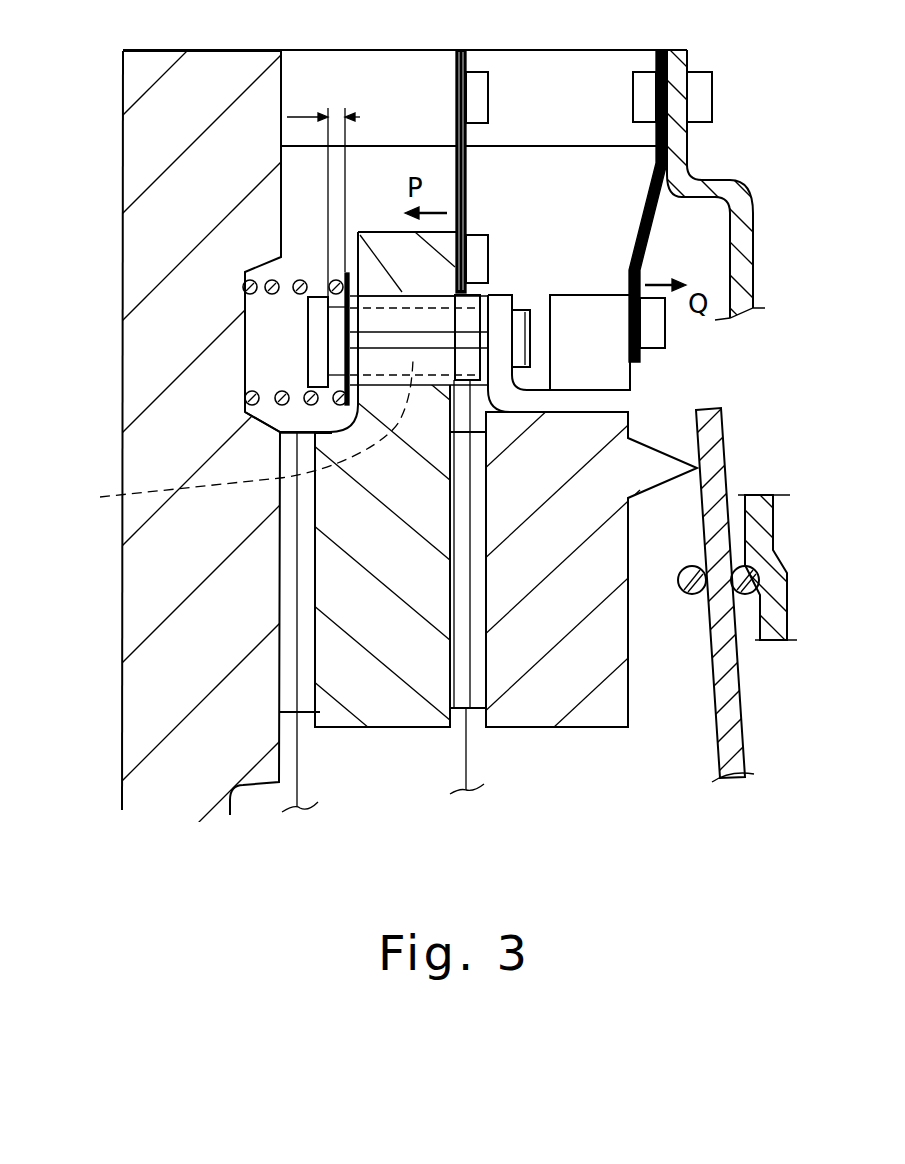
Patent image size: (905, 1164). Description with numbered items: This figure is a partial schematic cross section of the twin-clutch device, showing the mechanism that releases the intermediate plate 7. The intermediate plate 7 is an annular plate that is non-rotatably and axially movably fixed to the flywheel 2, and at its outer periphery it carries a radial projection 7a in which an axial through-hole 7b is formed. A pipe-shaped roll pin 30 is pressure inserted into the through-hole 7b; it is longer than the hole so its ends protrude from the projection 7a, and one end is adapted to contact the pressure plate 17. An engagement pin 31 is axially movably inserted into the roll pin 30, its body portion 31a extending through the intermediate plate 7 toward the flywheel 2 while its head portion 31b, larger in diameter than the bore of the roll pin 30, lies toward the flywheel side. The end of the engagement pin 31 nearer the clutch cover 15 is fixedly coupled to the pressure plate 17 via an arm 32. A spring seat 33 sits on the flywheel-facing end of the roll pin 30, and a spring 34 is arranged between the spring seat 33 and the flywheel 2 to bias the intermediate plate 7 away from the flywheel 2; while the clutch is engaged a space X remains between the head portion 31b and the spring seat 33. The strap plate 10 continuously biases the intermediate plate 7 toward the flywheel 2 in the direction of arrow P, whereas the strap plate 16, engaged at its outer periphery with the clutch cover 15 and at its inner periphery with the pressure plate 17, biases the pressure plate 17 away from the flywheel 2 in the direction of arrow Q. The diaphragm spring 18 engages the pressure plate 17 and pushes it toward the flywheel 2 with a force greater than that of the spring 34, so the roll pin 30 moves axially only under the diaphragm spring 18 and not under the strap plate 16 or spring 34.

The flywheel 2 is at (157, 301).
The intermediate plate 7 is at (340, 525).
The radial projection 7a is at (395, 300).
The axial through-hole 7b is at (412, 295).
The strap plate 10 is at (467, 187).
The clutch cover 15 is at (743, 227).
The strap plate 16 is at (648, 248).
The pressure plate 17 is at (588, 712).
The diaphragm spring 18 is at (713, 433).
The roll pin 30 is at (487, 265).
The engagement pin 31 is at (283, 363).
The body portion 31a is at (225, 438).
The head portion 31b is at (322, 323).
The arm 32 is at (608, 400).
The spring seat 33 is at (346, 272).
The spring 34 is at (273, 276).